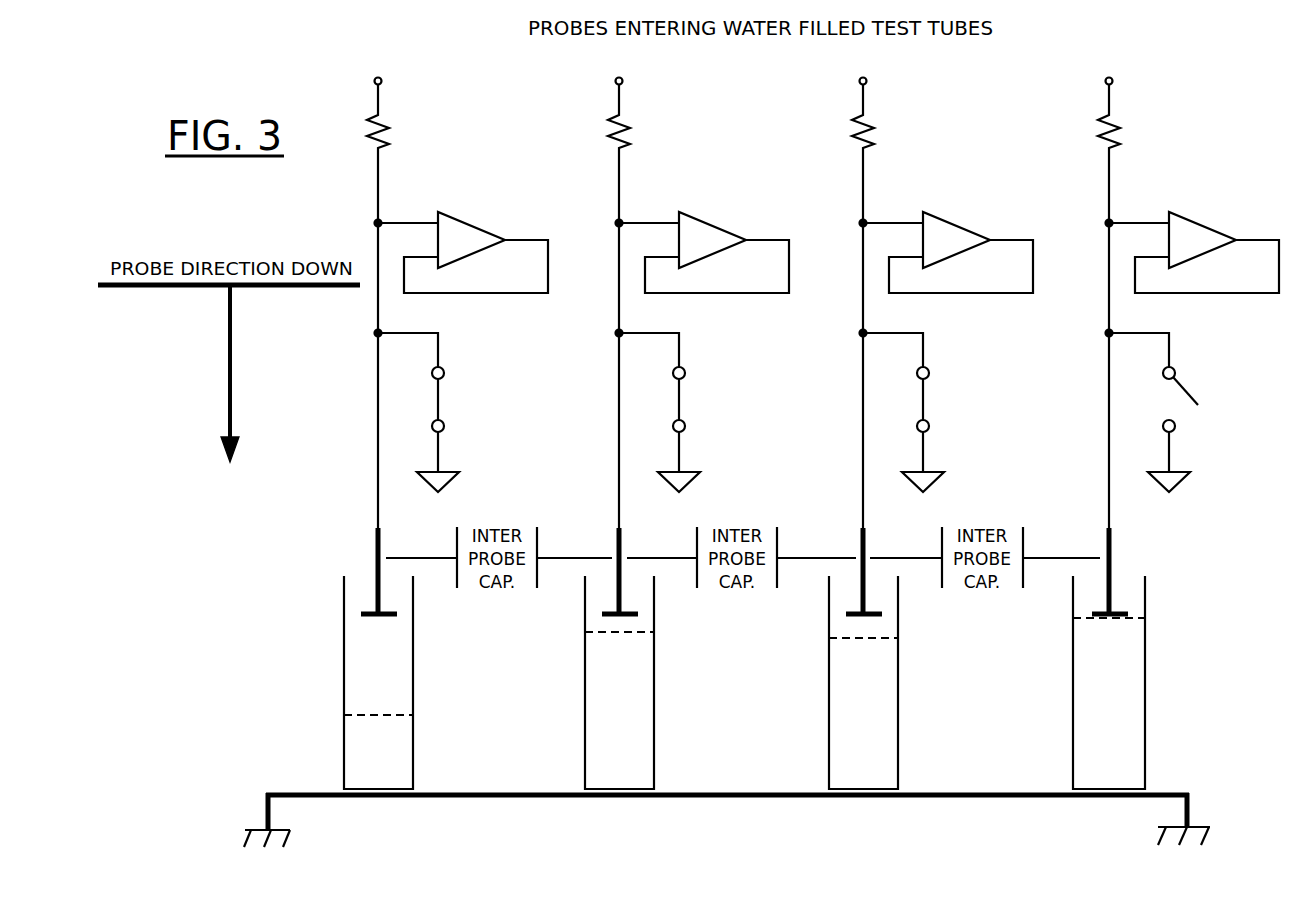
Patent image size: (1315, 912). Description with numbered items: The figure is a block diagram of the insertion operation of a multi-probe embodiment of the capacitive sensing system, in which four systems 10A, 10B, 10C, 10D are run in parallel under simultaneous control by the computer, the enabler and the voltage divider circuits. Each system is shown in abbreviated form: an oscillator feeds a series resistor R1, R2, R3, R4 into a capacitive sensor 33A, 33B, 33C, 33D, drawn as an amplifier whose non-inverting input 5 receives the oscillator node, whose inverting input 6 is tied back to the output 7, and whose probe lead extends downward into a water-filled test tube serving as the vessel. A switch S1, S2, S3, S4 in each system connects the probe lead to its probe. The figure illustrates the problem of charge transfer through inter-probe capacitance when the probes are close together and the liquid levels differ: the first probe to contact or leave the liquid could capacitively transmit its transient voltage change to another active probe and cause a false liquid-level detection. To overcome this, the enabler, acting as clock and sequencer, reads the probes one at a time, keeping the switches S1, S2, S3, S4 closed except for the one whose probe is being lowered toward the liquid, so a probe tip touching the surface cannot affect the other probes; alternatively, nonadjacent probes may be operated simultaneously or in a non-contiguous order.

The capacitive sensing system 10A is at (532, 137).
The capacitive sensing system 10B is at (672, 442).
The capacitive sensing system 10C is at (916, 442).
The capacitive sensing system 10D is at (1162, 442).
The capacitive sensor 33A is at (473, 253).
The capacitive sensor 33B is at (717, 252).
The capacitive sensor 33C is at (961, 252).
The capacitive sensor 33D is at (1207, 252).
The resistor R1 is at (397, 131).
The resistor R2 is at (638, 131).
The resistor R3 is at (882, 131).
The resistor R4 is at (1128, 131).
The switch S1 is at (426, 412).
The switch S2 is at (667, 412).
The switch S3 is at (911, 412).
The switch S4 is at (1157, 412).
The non-inverting input pin 5 is at (773, 212).
The inverting input pin 6 is at (786, 249).
The output pin 7 is at (892, 230).